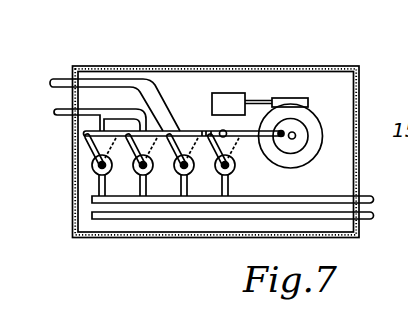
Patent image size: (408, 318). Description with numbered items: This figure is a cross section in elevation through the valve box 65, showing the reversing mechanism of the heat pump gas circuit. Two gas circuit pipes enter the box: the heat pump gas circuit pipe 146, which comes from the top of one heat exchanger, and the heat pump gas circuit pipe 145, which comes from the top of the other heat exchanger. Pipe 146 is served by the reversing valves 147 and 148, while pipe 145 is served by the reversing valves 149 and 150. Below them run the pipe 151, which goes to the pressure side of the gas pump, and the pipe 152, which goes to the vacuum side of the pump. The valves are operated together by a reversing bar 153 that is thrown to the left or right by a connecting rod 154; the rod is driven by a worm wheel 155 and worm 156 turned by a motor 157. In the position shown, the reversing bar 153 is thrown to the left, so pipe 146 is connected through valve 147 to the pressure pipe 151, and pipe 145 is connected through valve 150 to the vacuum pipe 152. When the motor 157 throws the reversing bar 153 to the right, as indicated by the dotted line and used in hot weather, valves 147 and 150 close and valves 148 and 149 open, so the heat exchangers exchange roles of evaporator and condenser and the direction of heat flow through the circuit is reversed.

The valve box 65 is at (348, 88).
The heat pump gas circuit pipe 145 is at (60, 79).
The heat pump gas circuit pipe 146 is at (63, 116).
The reversing valve 147 is at (92, 165).
The reversing valve 148 is at (134, 170).
The reversing valve 149 is at (176, 171).
The reversing valve 150 is at (234, 169).
The pipe 151 is at (369, 196).
The pipe 152 is at (369, 222).
The reversing bar 153 is at (212, 118).
The connecting rod 154 is at (255, 130).
The worm wheel 155 is at (313, 116).
The worm 156 is at (294, 98).
The motor 157 is at (233, 93).